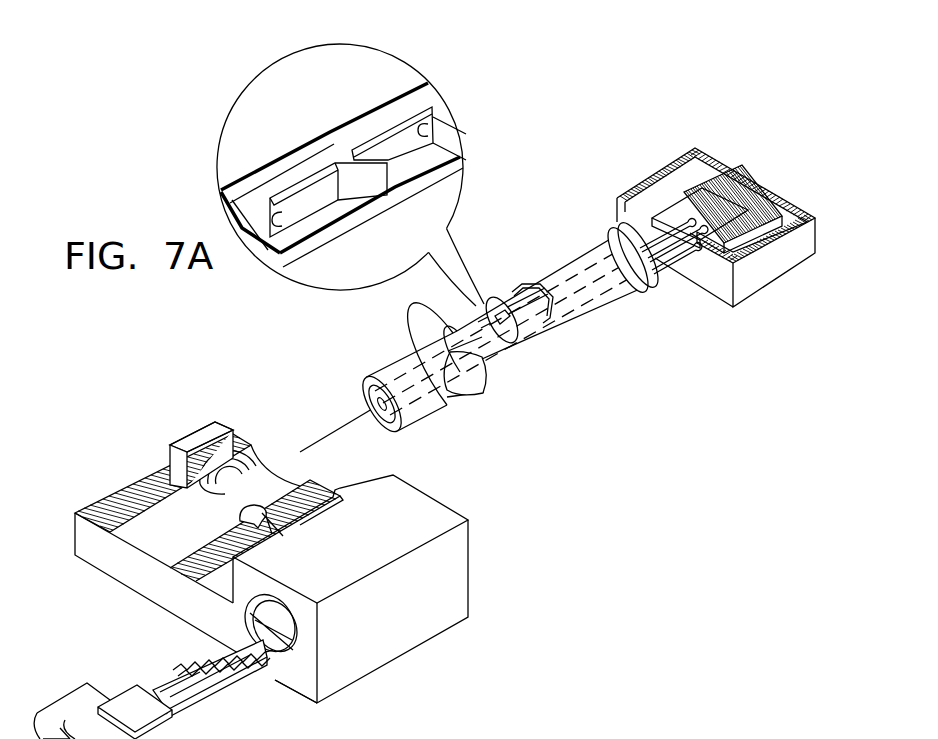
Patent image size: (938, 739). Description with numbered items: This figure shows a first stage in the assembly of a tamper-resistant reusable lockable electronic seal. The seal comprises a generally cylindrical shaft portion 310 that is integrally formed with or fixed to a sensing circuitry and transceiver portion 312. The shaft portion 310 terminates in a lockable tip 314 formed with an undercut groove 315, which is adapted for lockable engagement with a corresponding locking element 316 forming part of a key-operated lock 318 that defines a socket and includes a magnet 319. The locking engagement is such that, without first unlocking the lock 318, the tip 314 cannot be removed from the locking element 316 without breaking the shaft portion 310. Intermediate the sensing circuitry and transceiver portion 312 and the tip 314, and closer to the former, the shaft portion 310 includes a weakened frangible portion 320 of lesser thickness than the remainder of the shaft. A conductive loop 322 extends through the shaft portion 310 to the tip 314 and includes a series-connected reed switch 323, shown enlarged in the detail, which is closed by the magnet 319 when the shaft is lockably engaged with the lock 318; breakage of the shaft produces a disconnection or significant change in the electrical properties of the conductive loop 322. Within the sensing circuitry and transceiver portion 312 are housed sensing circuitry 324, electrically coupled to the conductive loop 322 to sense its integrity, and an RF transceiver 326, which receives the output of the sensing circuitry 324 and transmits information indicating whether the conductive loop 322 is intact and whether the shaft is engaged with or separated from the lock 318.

The shaft portion 310 is at (556, 244).
The sensing circuitry and transceiver portion 312 is at (763, 281).
The lockable tip 314 is at (456, 414).
The undercut groove 315 is at (482, 384).
The locking element 316 is at (270, 530).
The lock 318 is at (398, 636).
The magnet 319 is at (186, 445).
The weakened frangible portion 320 is at (652, 285).
The conductive loop 322 is at (356, 398).
The reed switch 323 is at (380, 78).
The sensing circuitry 324 is at (682, 206).
The RF transceiver 326 is at (736, 193).